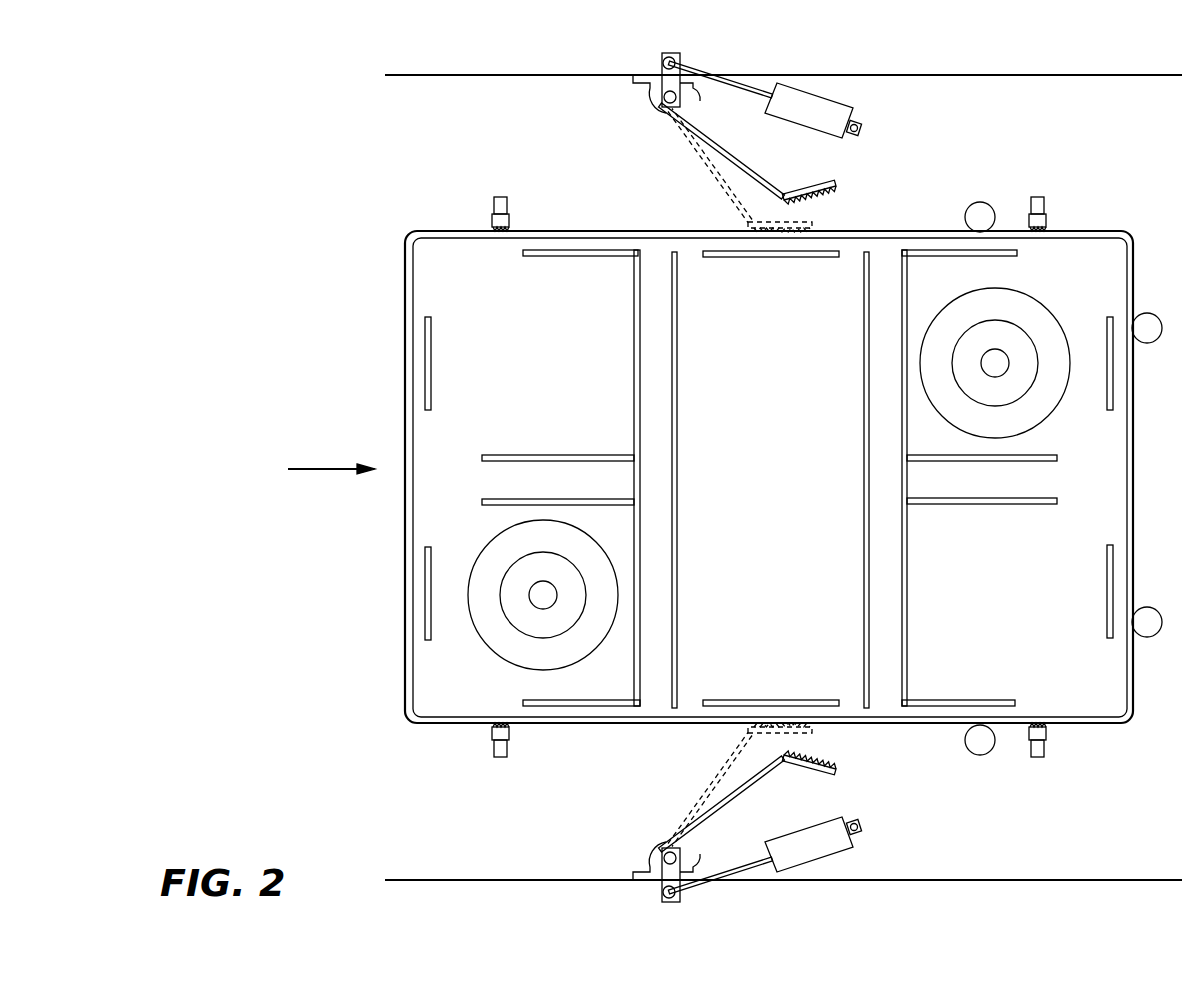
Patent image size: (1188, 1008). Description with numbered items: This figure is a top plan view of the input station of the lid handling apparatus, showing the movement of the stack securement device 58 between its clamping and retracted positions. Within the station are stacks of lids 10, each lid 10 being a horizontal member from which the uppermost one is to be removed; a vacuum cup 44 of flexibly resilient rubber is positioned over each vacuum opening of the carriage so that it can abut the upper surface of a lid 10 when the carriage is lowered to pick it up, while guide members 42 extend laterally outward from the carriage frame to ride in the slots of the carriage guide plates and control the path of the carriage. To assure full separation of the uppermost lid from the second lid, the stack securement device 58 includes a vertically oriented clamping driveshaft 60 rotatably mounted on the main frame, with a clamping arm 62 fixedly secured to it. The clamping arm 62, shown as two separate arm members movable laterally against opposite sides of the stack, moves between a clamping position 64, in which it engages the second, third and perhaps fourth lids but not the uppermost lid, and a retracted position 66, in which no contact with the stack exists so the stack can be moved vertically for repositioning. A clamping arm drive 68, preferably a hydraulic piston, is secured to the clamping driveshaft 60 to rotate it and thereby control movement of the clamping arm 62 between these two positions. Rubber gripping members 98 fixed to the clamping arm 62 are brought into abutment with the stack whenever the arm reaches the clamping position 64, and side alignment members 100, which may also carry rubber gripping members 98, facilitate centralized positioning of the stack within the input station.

The lid 10 is at (790, 477).
The guide member 42 is at (498, 758).
The vacuum cup 44 is at (495, 638).
The stack securement device 58 is at (736, 165).
The clamping driveshaft 60 is at (696, 90).
The clamping arm 62 is at (768, 181).
The clamping position 64 is at (718, 768).
The retracted position 66 is at (768, 773).
The clamping arm drive 68 is at (874, 106).
The rubber gripping member 98 is at (510, 228).
The side alignment member 100 is at (500, 197).